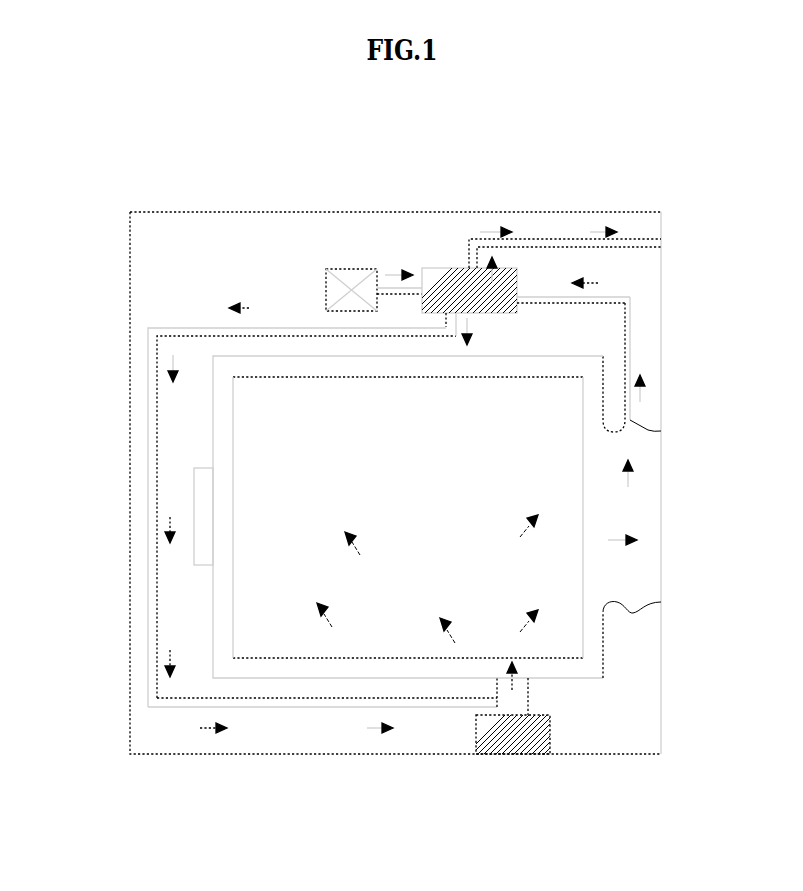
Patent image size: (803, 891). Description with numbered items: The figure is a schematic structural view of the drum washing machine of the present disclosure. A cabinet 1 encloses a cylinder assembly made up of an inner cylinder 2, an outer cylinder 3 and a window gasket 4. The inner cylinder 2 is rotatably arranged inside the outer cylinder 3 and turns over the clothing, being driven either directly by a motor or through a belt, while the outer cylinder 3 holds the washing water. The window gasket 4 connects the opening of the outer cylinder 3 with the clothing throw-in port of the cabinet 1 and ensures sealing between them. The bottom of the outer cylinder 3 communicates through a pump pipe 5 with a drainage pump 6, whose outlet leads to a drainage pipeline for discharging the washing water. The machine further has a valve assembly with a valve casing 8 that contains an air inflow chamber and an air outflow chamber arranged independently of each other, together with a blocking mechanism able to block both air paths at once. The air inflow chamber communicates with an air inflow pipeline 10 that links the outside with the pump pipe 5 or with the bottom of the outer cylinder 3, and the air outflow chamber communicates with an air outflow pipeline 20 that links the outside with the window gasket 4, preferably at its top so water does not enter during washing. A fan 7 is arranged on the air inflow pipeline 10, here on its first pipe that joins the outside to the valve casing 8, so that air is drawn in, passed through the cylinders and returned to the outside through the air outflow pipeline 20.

The cabinet 1 is at (277, 754).
The inner cylinder 2 is at (408, 377).
The outer cylinder 3 is at (290, 356).
The window gasket 4 is at (636, 614).
The pump pipe 5 is at (529, 697).
The drainage pump 6 is at (517, 732).
The fan 7 is at (355, 269).
The valve casing 8 is at (521, 268).
The air inflow pipeline 10 is at (148, 465).
The air outflow pipeline 20 is at (630, 333).